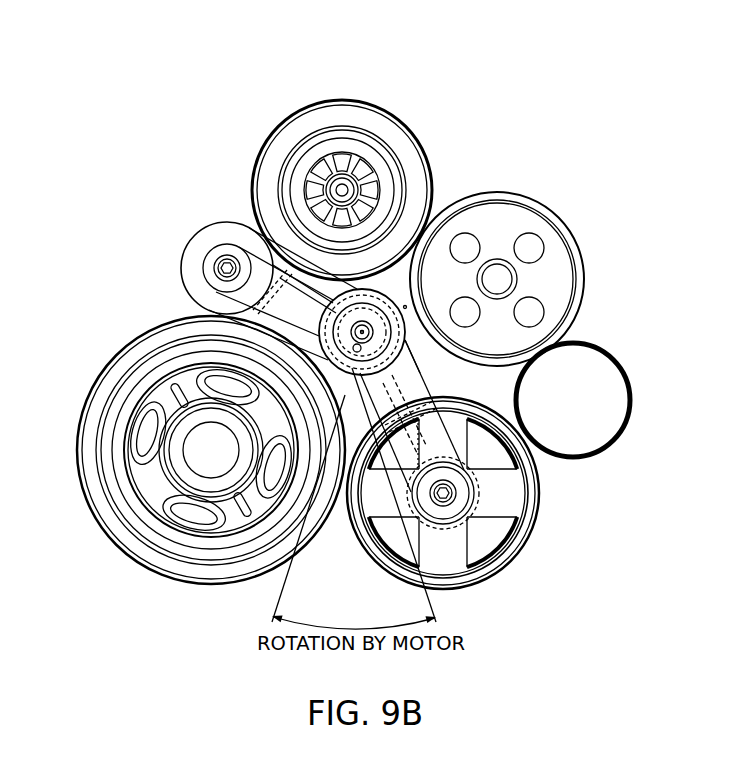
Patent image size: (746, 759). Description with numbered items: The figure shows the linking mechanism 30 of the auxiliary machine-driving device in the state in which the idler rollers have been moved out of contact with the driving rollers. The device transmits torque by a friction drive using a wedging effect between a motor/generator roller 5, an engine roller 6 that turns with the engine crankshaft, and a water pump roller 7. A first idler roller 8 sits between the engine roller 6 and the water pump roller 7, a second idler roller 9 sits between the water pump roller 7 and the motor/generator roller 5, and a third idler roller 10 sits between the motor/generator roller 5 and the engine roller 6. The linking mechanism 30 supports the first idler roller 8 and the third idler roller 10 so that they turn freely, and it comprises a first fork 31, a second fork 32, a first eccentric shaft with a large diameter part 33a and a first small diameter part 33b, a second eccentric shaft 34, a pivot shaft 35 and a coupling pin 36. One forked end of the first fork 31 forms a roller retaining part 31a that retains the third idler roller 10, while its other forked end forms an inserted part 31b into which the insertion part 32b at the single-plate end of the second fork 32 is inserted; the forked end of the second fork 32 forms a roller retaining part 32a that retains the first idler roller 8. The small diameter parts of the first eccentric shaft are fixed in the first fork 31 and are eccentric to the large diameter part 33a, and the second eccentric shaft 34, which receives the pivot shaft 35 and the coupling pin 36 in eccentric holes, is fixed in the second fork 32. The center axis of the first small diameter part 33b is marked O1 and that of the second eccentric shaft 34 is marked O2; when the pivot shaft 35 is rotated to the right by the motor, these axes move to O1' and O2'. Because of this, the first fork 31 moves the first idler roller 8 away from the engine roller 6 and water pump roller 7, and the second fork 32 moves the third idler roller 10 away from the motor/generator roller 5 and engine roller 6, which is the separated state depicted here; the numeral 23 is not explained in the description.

The motor/generator roller 5 is at (598, 452).
The engine roller 6 is at (156, 569).
The water pump roller 7 is at (414, 132).
The first idler roller 8 is at (206, 236).
The second idler roller 9 is at (555, 213).
The third idler roller 10 is at (537, 514).
The center pulley 23 is at (382, 292).
The linking mechanism 30 is at (568, 315).
The first fork 31 is at (448, 420).
The roller retaining part 31a is at (403, 442).
The inserted part 31b is at (456, 367).
The second fork 32 is at (316, 276).
The roller retaining part 32a is at (214, 267).
The insertion part 32b is at (200, 304).
The large diameter part 33a is at (352, 176).
The first small diameter part 33b is at (391, 420).
The second eccentric shaft 34 is at (347, 445).
The pivot shaft 35 is at (392, 288).
The coupling pin 36 is at (350, 317).
The center axis position of first and second small diameter parts O1 is at (489, 285).
The moved center axis position of first and second small diameter parts O1' is at (504, 294).
The center axis position of second eccentric shaft O2 is at (204, 365).
The moved center axis position of second eccentric shaft O2' is at (234, 335).